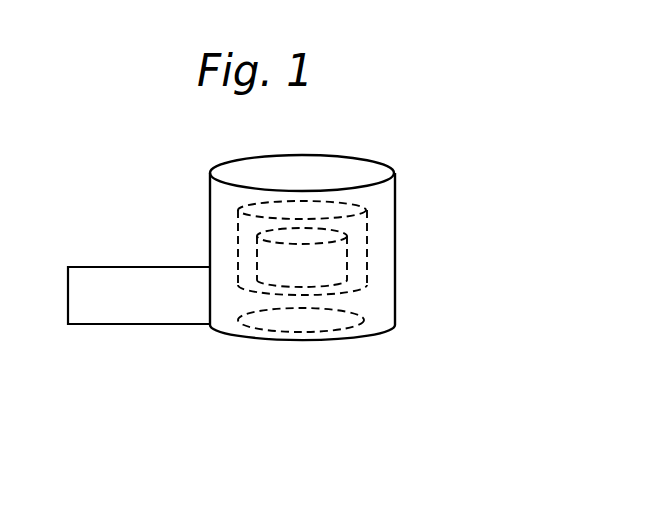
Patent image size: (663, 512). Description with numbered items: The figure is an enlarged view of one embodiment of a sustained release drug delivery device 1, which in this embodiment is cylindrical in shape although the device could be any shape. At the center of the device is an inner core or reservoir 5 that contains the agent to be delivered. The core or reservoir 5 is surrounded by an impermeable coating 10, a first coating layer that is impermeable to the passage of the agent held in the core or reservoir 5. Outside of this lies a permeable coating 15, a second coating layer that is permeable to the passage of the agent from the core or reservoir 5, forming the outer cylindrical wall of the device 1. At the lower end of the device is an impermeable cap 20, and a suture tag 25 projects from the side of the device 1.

The sustained release drug delivery device 1 is at (395, 173).
The inner core or reservoir 5 is at (330, 263).
The impermeable coating 10 is at (365, 227).
The permeable coating 15 is at (392, 302).
The impermeable cap 20 is at (300, 322).
The suture tag 25 is at (130, 313).